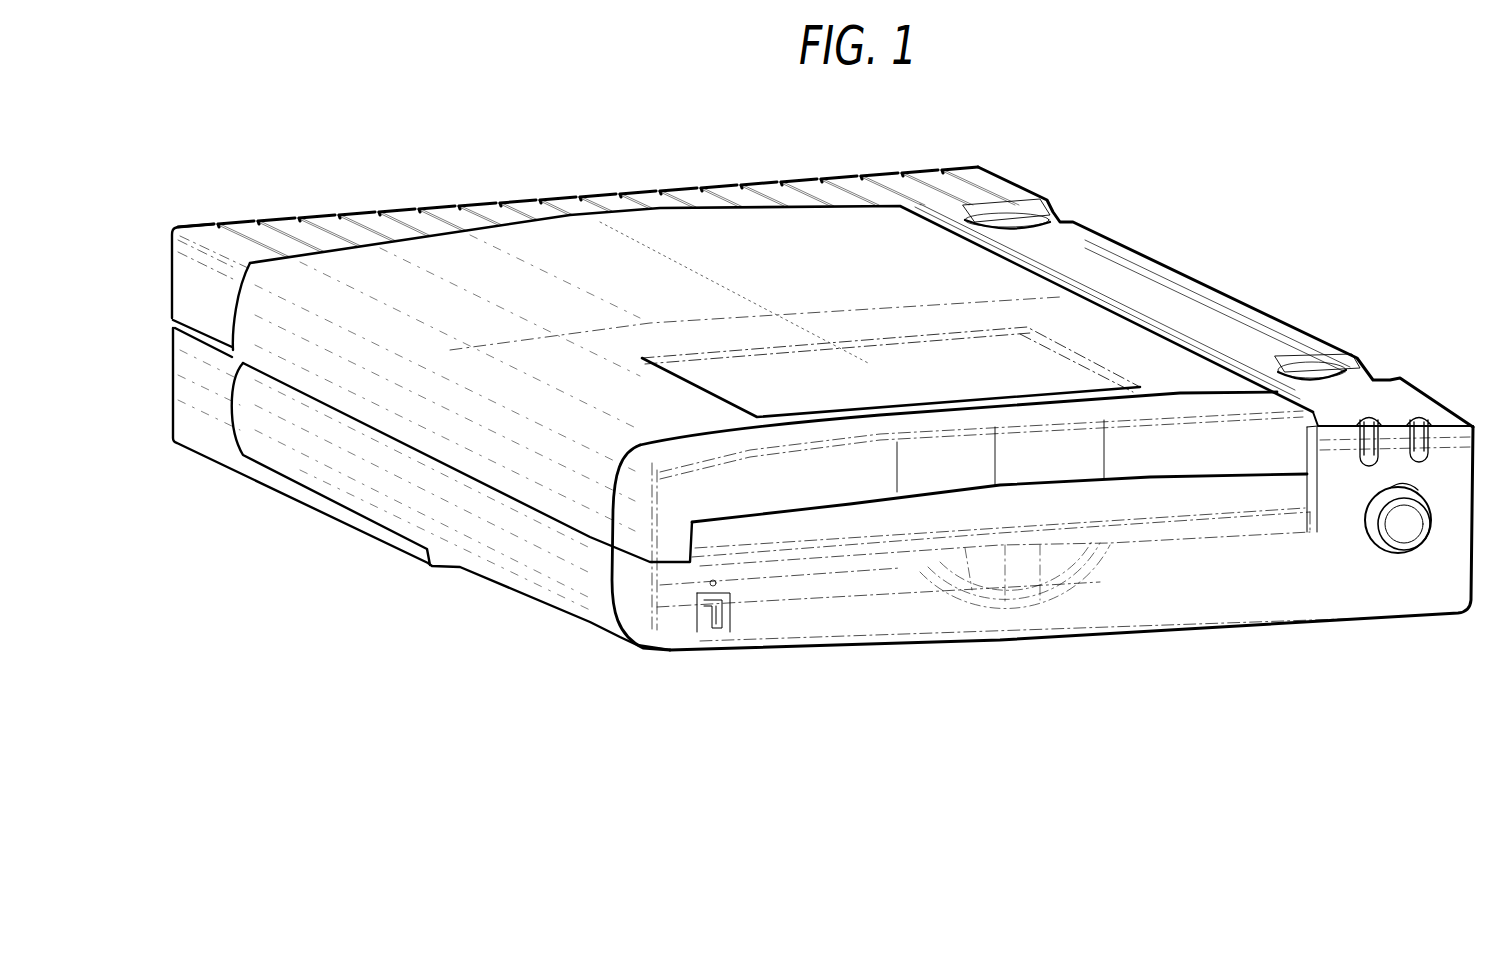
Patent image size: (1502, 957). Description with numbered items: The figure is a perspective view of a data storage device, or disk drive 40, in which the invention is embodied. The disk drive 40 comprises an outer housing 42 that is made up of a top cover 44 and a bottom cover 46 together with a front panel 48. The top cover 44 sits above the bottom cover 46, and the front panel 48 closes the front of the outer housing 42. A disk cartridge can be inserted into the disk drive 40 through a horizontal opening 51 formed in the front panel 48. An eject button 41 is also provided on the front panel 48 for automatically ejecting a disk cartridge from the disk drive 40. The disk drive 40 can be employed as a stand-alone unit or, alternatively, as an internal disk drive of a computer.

The disk drive 40 is at (448, 156).
The eject button 41 is at (1400, 527).
The outer housing 42 is at (770, 227).
The top cover 44 is at (185, 283).
The bottom cover 46 is at (205, 415).
The front panel 48 is at (1267, 593).
The horizontal opening 51 is at (1003, 490).